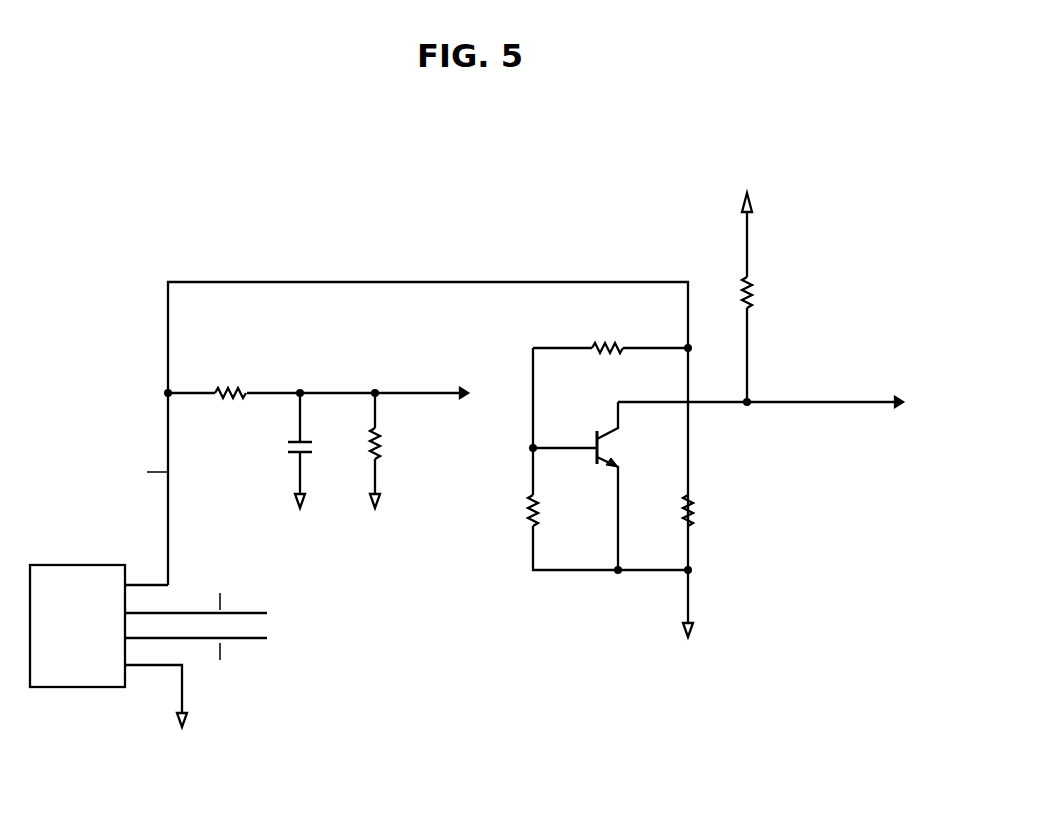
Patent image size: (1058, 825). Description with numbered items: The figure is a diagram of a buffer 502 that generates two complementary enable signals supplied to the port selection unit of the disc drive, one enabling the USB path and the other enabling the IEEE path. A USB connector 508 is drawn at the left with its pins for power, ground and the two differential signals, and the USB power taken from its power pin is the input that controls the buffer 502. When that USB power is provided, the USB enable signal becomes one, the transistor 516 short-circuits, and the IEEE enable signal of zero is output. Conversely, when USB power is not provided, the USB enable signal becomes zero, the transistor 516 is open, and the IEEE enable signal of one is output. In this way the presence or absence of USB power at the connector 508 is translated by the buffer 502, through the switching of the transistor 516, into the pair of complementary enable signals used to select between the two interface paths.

The power detection circuit 502 is at (483, 208).
The USB connector 508 is at (80, 565).
The transistor 516 is at (598, 486).